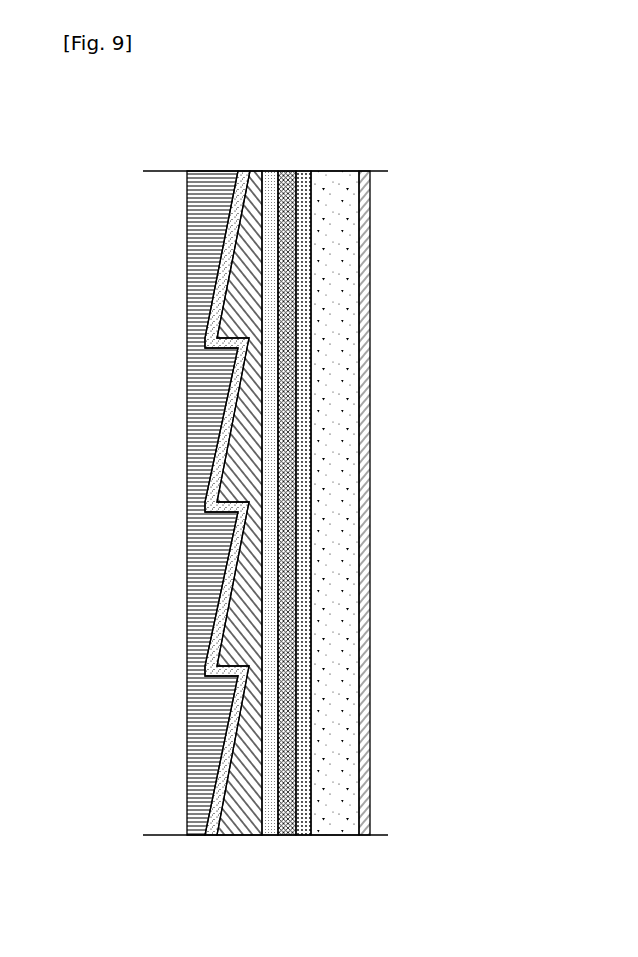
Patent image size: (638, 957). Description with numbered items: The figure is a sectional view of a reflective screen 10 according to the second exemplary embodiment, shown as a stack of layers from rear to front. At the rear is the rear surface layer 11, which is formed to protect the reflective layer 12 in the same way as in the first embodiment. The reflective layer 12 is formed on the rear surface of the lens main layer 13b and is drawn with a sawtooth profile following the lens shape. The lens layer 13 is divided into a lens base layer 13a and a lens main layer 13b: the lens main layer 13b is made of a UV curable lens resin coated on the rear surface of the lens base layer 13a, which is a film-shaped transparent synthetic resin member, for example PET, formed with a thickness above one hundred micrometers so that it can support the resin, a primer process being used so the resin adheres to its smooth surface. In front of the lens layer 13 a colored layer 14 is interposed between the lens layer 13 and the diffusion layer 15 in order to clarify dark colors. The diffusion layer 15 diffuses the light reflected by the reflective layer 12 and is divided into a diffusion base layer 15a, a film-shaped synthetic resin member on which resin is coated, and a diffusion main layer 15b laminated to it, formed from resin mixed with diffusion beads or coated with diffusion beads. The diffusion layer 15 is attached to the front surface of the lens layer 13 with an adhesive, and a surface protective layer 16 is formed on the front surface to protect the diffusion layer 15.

The laminate structure 10 is at (204, 150).
The rear surface layer 11 is at (194, 249).
The reflective layer 12 is at (217, 300).
The lens layer 13 is at (180, 503).
The lens base layer 13a is at (270, 398).
The lens main layer 13b is at (238, 422).
The colored layer 14 is at (292, 364).
The diffusion layer 15 is at (387, 503).
The diffusion base layer 15a is at (305, 492).
The diffusion main layer 15b is at (328, 522).
The surface protective layer 16 is at (365, 585).